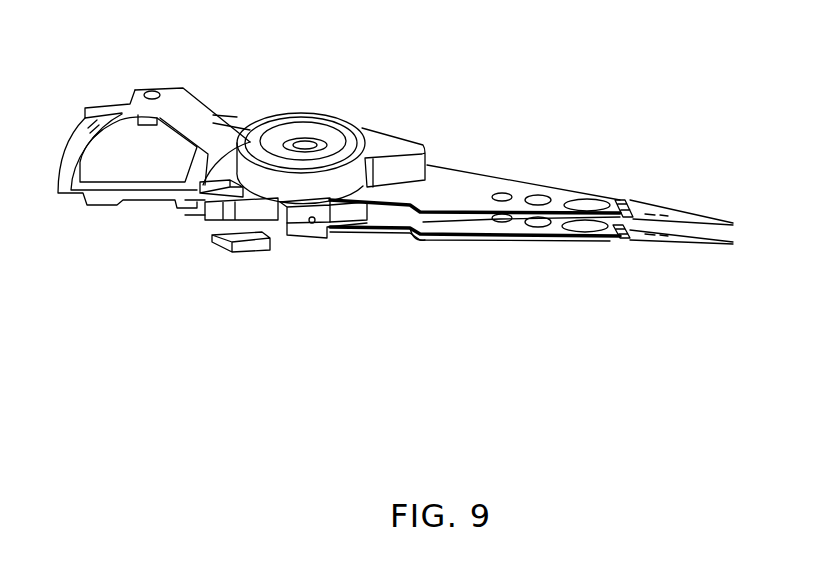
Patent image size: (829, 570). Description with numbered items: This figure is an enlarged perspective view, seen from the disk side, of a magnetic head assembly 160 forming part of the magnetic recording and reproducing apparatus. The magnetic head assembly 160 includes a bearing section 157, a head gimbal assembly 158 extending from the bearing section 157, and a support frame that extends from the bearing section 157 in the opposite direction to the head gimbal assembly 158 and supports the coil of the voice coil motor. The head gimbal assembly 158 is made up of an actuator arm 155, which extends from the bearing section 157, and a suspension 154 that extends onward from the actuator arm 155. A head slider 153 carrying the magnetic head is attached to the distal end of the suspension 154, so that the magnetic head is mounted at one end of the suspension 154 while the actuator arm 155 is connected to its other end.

The head slider 153 is at (702, 220).
The suspension 154 is at (700, 220).
The actuator arm 155 is at (563, 195).
The bearing section 157 is at (313, 95).
The head gimbal assembly 158 is at (517, 168).
The magnetic head assembly 160 is at (482, 118).